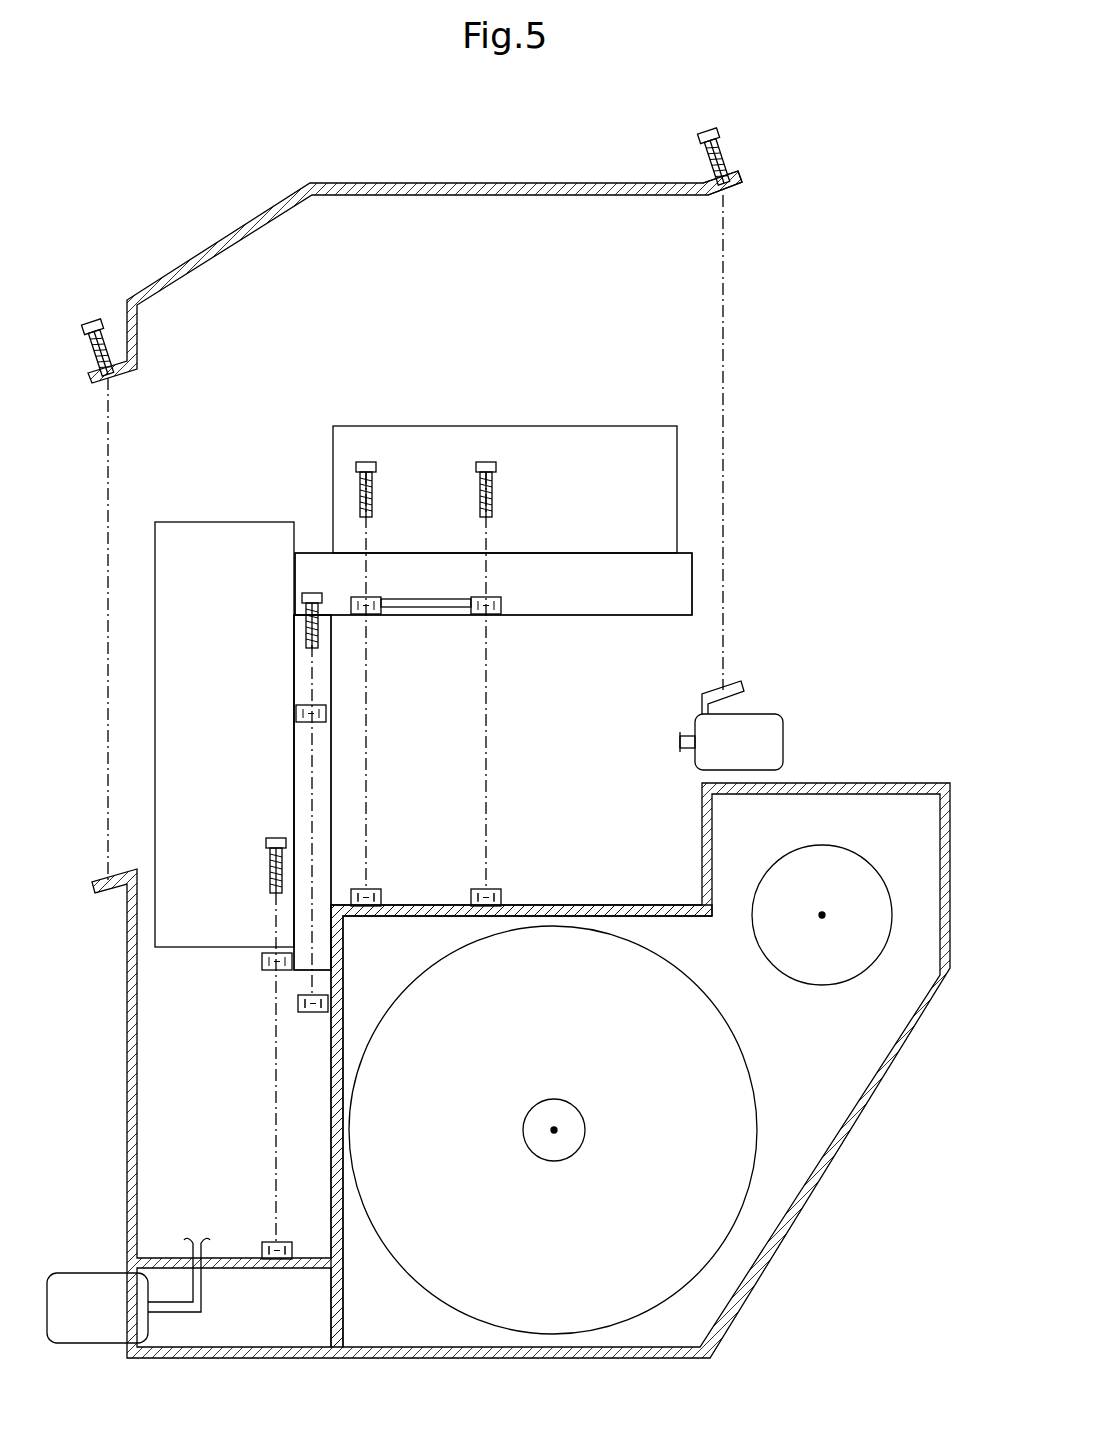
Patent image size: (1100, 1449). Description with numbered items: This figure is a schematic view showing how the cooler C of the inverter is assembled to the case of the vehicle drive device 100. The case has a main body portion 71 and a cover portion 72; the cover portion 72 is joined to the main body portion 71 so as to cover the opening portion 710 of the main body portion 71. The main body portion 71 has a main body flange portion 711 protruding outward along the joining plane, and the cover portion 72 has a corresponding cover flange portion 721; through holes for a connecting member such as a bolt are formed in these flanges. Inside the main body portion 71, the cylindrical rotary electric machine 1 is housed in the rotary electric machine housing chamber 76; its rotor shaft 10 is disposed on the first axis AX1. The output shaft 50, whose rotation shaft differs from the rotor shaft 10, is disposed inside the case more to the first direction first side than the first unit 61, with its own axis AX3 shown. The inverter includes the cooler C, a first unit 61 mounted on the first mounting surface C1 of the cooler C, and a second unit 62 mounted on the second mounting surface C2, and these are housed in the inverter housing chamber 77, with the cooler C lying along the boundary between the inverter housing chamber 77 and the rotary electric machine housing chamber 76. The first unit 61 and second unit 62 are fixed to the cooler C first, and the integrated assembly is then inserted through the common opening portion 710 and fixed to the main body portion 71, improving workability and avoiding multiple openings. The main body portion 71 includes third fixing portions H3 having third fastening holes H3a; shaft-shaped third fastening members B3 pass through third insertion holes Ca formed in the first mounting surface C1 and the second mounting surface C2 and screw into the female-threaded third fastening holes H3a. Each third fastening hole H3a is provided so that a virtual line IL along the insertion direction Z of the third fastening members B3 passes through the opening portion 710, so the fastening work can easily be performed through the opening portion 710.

The vehicle drive device 100 is at (905, 102).
The cover portion 72 is at (333, 172).
The cover flange portion 721 is at (752, 168).
The first unit 61 is at (585, 422).
The second unit 62 is at (193, 520).
The cooler C is at (695, 583).
The first mounting surface C1 is at (583, 553).
The second mounting surface C2 is at (294, 650).
The third fastening member B3 is at (366, 462).
The third insertion hole Ca is at (381, 606).
The insertion direction Z is at (515, 645).
The main body portion 71 is at (929, 777).
The opening portion 710 is at (577, 737).
The main body flange portion 711 is at (753, 668).
The output shaft 50 is at (877, 853).
The axis of roller AX3 is at (822, 915).
The rotary electric machine 1 is at (714, 1282).
The rotor shaft 10 is at (588, 1146).
The first axis AX1 is at (554, 1130).
The third fixing portion H3 is at (378, 880).
The third fastening hole H3a is at (381, 897).
The virtual line IL is at (312, 780).
The rotary electric machine housing chamber 76 is at (392, 1320).
The inverter housing chamber 77 is at (224, 1145).